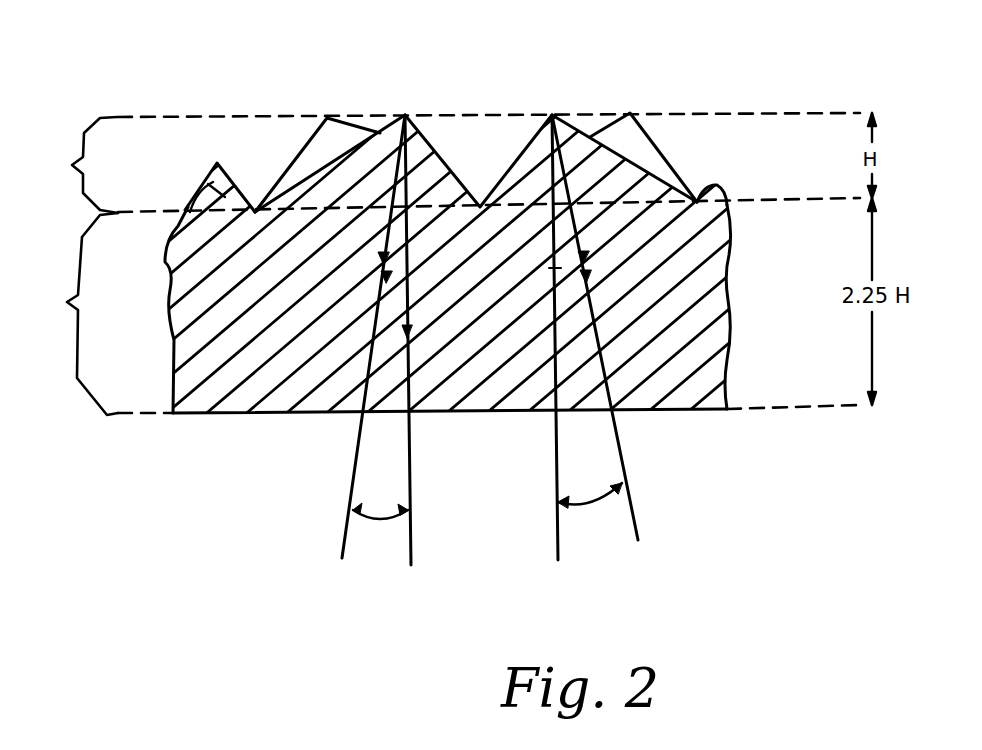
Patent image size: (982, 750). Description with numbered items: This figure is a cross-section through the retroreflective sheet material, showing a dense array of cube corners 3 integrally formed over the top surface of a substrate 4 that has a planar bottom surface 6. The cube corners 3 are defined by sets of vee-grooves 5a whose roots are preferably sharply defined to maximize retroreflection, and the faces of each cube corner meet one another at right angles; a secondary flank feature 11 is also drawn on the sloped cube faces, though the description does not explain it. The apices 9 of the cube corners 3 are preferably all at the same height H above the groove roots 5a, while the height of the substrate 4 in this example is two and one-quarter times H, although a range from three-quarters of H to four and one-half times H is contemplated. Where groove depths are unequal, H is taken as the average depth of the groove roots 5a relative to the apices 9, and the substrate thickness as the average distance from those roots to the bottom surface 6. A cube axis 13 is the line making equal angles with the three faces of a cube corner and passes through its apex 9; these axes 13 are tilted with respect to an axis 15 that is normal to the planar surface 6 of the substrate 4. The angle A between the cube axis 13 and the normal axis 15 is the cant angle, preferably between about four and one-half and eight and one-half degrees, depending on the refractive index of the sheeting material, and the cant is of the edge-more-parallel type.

The cube corners 3 is at (70, 165).
The substrate 4 is at (68, 314).
The vee-grooves 5a is at (481, 205).
The planar bottom surface 6 is at (296, 414).
The apices 9 is at (405, 115).
The secondary tooth flank 11 is at (322, 168).
The cube axes 13 is at (352, 482).
The axis normal to the planar surface 15 is at (415, 458).
The angle of axis tilt A is at (373, 524).